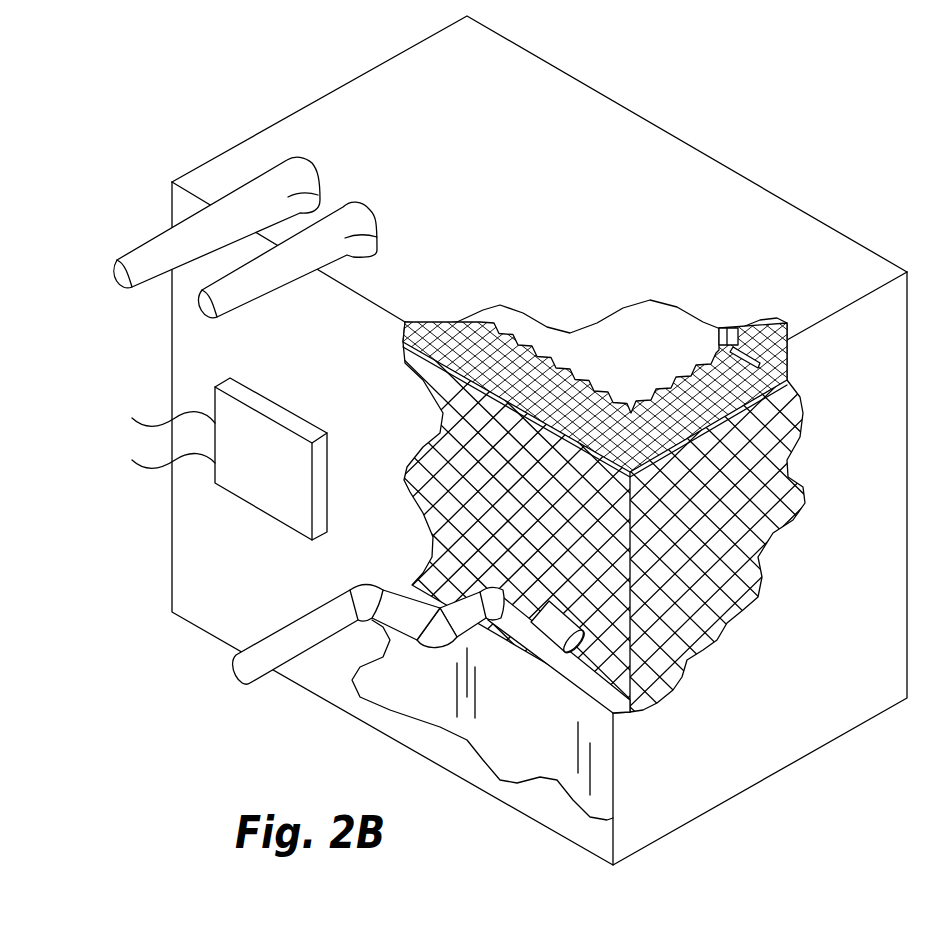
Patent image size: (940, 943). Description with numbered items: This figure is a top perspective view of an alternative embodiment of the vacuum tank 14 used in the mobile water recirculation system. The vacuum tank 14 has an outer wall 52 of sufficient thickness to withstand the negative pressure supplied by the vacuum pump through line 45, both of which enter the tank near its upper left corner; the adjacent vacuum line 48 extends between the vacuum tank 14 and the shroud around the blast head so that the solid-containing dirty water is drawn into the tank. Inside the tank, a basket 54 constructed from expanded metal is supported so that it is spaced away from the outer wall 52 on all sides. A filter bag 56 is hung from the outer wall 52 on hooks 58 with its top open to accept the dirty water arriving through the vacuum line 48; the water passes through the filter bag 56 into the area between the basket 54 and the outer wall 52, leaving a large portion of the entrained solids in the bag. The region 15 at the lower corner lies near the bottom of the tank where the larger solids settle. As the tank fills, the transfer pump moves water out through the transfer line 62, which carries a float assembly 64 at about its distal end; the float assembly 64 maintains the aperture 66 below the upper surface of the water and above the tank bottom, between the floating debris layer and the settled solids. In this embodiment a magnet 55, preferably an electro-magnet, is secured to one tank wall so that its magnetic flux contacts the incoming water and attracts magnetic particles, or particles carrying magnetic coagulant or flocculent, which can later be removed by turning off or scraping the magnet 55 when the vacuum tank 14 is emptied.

The vacuum tank 14 is at (603, 203).
The drain sump 15 is at (727, 644).
The line 45 is at (235, 278).
The vacuum line 48 is at (262, 193).
The outer wall 52 is at (613, 117).
The basket 54 is at (757, 582).
The magnet 55 is at (280, 477).
The filter bag 56 is at (727, 391).
The hooks 58 is at (731, 343).
The transfer line 62 is at (282, 648).
The float assembly 64 is at (683, 700).
The aperture 66 is at (646, 712).